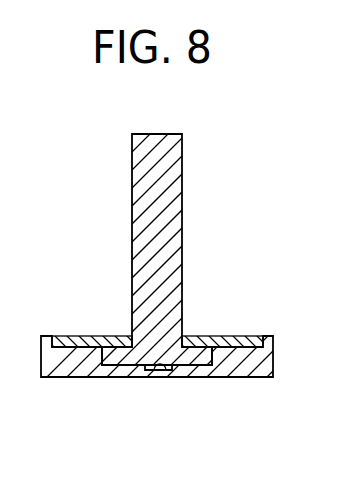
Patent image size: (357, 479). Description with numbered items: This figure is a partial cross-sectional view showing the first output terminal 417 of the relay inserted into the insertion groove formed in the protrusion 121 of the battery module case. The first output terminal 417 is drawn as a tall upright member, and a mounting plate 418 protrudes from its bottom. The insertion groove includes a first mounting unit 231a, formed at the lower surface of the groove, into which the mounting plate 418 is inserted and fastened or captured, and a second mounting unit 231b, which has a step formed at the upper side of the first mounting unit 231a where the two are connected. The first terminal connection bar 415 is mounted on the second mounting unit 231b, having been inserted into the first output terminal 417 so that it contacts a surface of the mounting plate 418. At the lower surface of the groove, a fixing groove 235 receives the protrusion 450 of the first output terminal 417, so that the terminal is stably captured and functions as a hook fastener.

The protrusion 121 is at (73, 367).
The first mounting unit 231a is at (213, 370).
The second mounting unit 231b is at (248, 336).
The fixing groove 235 is at (165, 377).
The first terminal connection bar 415 is at (83, 335).
The first output terminal 417 is at (162, 197).
The mounting plate 418 is at (124, 362).
The protrusion 450 is at (148, 373).